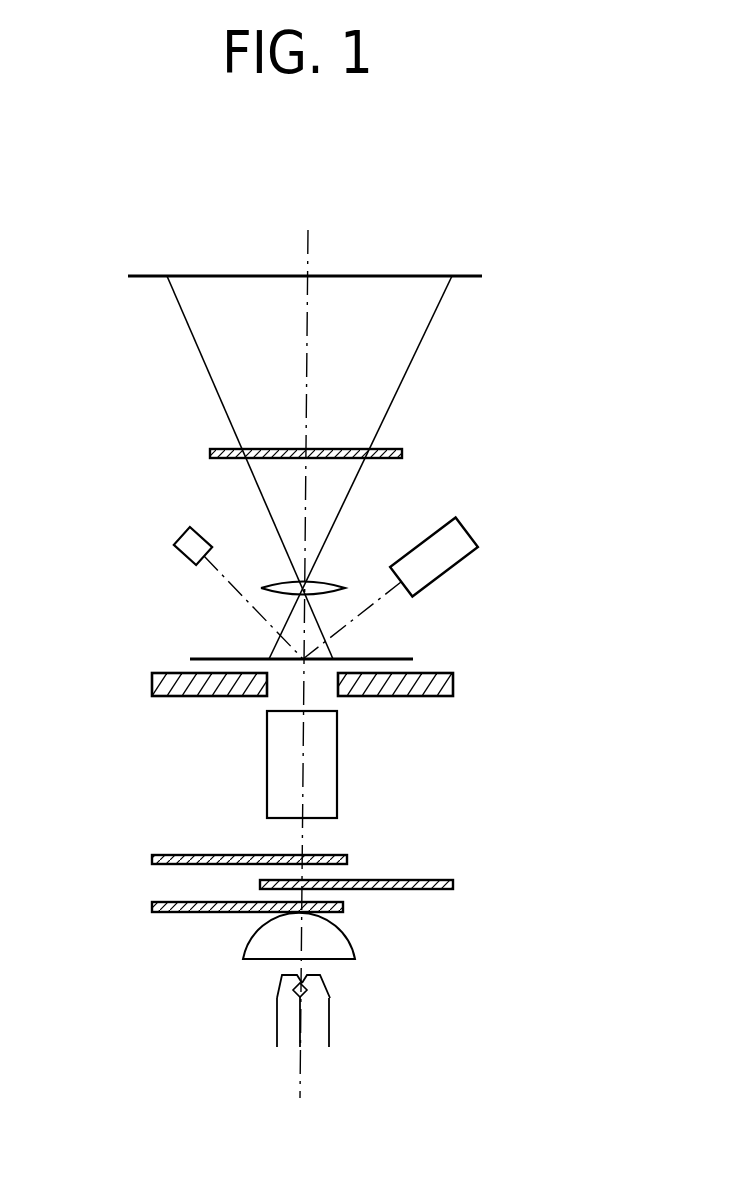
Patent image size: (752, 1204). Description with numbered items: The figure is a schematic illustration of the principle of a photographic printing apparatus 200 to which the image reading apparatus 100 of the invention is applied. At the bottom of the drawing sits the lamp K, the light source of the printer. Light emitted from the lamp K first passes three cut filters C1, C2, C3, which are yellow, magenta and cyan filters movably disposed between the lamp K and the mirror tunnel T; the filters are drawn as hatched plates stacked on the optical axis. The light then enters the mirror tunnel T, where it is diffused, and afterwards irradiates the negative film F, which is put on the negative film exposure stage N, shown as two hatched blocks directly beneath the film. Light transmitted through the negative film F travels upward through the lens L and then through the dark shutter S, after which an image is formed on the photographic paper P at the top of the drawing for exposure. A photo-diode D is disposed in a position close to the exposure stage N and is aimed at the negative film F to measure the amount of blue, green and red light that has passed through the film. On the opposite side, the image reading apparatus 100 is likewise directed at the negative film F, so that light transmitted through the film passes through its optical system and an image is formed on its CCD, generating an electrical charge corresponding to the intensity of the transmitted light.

The photographic printing apparatus 200 is at (490, 245).
The photographic paper P is at (137, 270).
The dark shutter S is at (210, 453).
The photo-diode D is at (177, 546).
The lens L is at (289, 567).
The image reading apparatus 100 is at (450, 562).
The negative film F is at (202, 653).
The negative film exposure stage N is at (173, 697).
The mirror tunnel T is at (338, 758).
The cut filter C1 is at (347, 860).
The cut filter C2 is at (453, 884).
The cut filter C3 is at (343, 908).
The lamp K is at (348, 980).